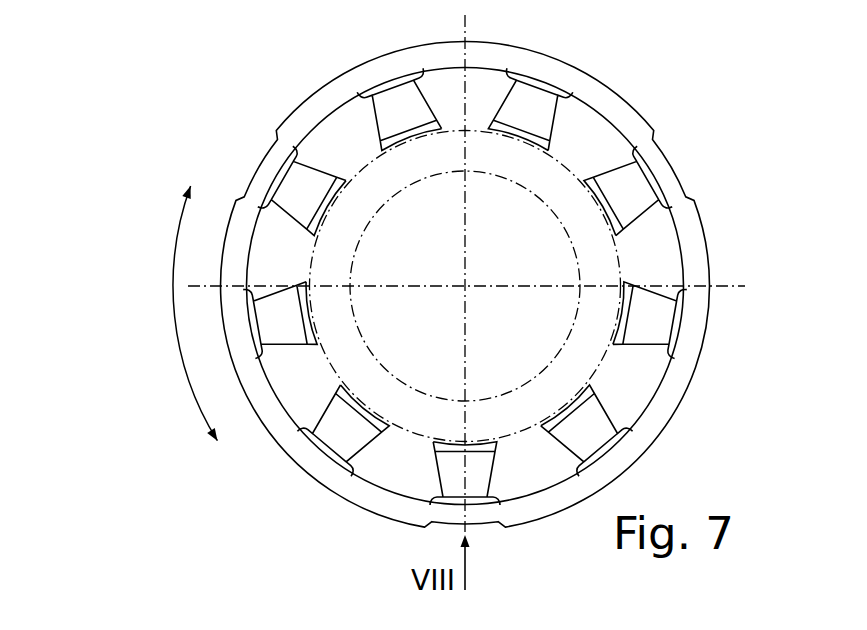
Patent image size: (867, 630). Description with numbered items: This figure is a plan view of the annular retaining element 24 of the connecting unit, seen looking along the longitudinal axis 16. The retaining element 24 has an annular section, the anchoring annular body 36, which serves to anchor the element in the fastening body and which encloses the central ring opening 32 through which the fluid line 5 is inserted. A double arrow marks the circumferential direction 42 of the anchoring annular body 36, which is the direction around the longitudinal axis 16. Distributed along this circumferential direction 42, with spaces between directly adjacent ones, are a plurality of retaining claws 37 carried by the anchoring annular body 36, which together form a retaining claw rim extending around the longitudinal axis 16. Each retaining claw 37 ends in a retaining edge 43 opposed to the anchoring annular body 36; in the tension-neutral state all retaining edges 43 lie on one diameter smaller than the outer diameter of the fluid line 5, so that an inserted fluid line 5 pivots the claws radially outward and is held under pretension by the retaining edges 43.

The fluid line 5 is at (585, 364).
The longitudinal axis 16 is at (467, 290).
The retaining element 24 is at (630, 117).
The ring opening 32 is at (510, 233).
The anchoring annular body 36 is at (690, 229).
The retaining claws 37 is at (292, 312).
The circumferential direction 42 is at (176, 338).
The retaining edge 43 is at (453, 445).